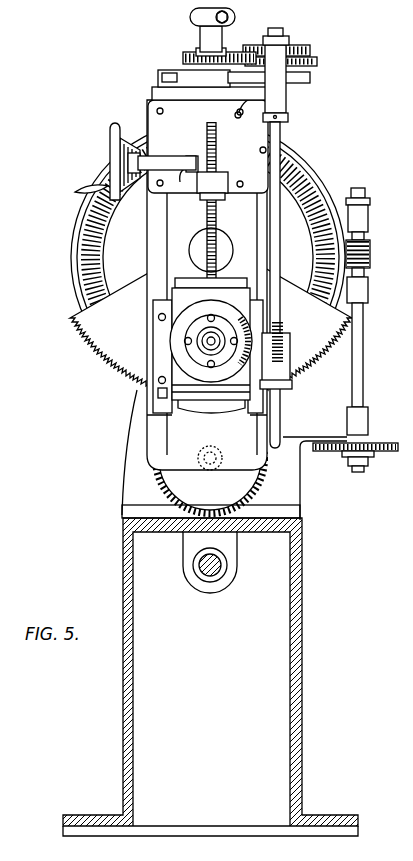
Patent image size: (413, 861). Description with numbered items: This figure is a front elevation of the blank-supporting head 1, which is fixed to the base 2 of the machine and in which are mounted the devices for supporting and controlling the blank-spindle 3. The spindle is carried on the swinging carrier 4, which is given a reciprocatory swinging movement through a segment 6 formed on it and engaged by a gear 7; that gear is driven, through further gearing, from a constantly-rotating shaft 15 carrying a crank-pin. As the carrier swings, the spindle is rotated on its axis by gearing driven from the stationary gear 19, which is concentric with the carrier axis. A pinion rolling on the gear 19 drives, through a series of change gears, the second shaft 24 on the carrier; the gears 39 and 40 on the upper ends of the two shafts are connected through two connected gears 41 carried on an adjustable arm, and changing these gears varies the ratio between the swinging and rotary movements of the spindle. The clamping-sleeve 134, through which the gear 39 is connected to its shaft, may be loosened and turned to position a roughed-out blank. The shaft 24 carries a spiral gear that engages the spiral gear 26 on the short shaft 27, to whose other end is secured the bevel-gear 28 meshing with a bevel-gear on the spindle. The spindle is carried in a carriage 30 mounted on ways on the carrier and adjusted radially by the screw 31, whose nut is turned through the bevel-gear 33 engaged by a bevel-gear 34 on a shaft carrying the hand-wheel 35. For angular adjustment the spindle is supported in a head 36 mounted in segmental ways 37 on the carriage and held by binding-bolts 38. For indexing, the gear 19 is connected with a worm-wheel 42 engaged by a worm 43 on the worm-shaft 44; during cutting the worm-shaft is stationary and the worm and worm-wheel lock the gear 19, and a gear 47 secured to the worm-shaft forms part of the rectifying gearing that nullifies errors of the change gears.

The blank-supporting head 1 is at (292, 460).
The base 2 is at (292, 640).
The blank-spindle 3 is at (210, 340).
The swinging carrier 4 is at (145, 252).
The segment 6 is at (90, 345).
The gear 7 is at (250, 490).
The constantly-rotating shaft 15 is at (205, 572).
The stationary gear 19 is at (325, 176).
The second shaft 24 is at (278, 220).
The spiral gear 26 is at (278, 328).
The short shaft 27 is at (280, 345).
The bevel-gear 28 is at (243, 322).
The carriage 30 is at (158, 303).
The screw 31 is at (205, 216).
The bevel-gear 33 is at (222, 172).
The bevel-gear 34 is at (196, 162).
The hand-wheel 35 is at (110, 136).
The head 36 is at (222, 373).
The segmental ways 37 is at (205, 405).
The binding-bolts 38 is at (160, 395).
The gear 39 is at (186, 58).
The gear 40 is at (308, 50).
The connected gears 41 is at (315, 62).
The worm-wheel 42 is at (300, 142).
The worm 43 is at (362, 247).
The worm-shaft 44 is at (358, 373).
The gear 47 is at (372, 451).
The clamping-sleeve 134 is at (205, 33).